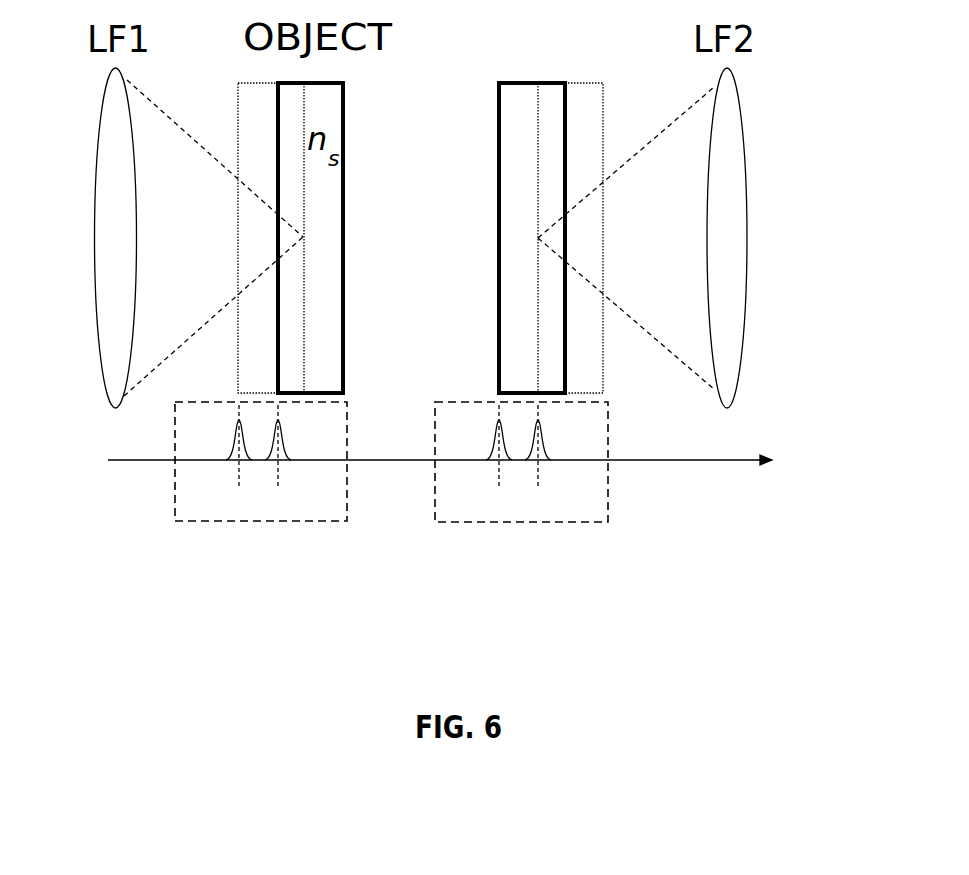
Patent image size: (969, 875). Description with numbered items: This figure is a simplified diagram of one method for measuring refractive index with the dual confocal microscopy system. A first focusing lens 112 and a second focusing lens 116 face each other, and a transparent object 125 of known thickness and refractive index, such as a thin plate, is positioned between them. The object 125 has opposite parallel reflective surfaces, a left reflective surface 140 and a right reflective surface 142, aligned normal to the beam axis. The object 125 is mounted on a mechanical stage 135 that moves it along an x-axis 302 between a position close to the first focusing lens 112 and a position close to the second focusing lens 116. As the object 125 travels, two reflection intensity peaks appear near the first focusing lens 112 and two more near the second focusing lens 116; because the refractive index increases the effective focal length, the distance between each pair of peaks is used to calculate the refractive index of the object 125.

The first focusing lens 112 is at (95, 263).
The second focusing lens 116 is at (747, 262).
The object 125 is at (330, 363).
The left reflective surface 140 is at (278, 140).
The right reflective surface 142 is at (343, 132).
The mechanical stage 135 is at (347, 445).
The x-axis 302 is at (745, 458).